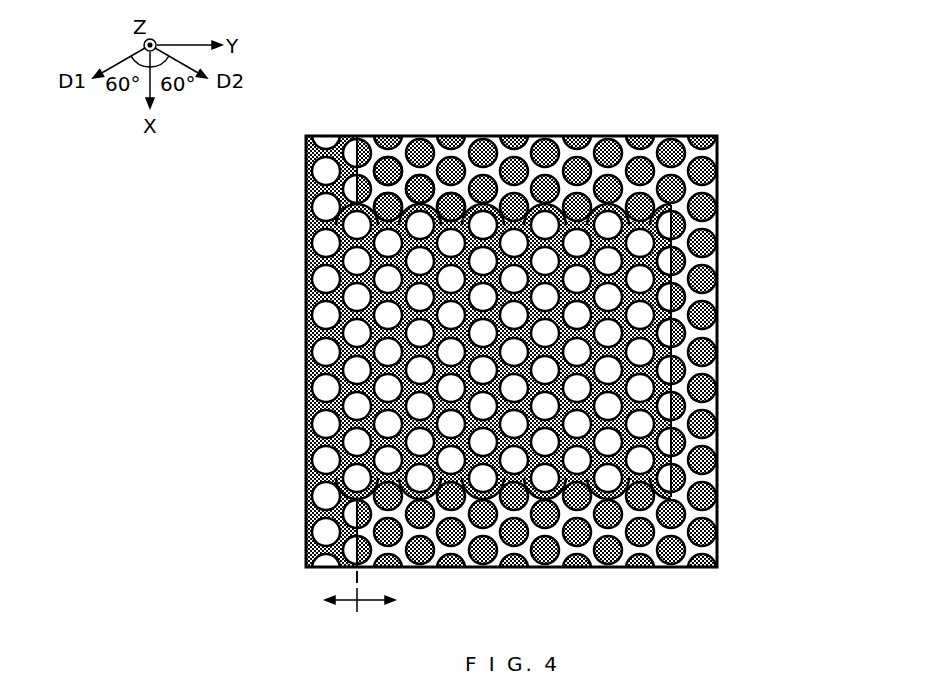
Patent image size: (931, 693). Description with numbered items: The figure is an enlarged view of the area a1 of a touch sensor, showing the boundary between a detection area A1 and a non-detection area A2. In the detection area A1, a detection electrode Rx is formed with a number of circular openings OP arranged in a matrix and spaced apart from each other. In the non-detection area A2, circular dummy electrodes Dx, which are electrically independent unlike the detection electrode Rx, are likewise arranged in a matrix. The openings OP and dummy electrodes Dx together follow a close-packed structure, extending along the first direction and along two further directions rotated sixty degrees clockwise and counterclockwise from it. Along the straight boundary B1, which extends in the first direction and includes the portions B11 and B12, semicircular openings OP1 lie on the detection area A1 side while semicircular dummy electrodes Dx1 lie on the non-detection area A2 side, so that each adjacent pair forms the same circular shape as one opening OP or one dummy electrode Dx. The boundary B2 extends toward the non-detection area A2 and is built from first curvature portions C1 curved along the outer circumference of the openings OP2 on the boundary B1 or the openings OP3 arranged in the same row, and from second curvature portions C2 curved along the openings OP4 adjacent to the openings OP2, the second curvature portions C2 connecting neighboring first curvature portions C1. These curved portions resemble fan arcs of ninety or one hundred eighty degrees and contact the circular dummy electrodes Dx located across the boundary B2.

The detection electrode Rx is at (314, 150).
The circular opening OP is at (326, 172).
The semicircular opening OP1 is at (356, 225).
The opening on boundary OP2 is at (353, 262).
The circular and semicircular opening OP3 is at (426, 223).
The adjacent opening OP4 is at (389, 248).
The first curvature portion C1 is at (424, 212).
The second curvature portion C2 is at (387, 226).
The dummy electrode Dx is at (431, 200).
The semicircular dummy electrode Dx1 is at (372, 204).
The straight boundary B1 is at (591, 298).
The boundary portion B11 is at (359, 204).
The boundary portion B12 is at (673, 238).
The boundary extending toward non-detection area B2 is at (565, 201).
The enlarged area a1 is at (720, 150).
The detection area A1 is at (324, 601).
The non-detection area A2 is at (389, 603).